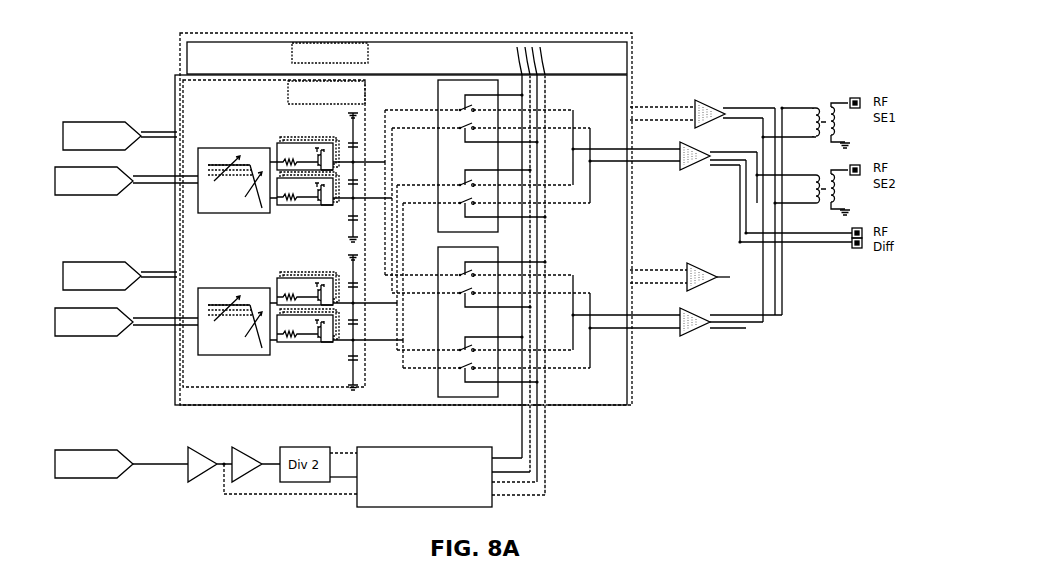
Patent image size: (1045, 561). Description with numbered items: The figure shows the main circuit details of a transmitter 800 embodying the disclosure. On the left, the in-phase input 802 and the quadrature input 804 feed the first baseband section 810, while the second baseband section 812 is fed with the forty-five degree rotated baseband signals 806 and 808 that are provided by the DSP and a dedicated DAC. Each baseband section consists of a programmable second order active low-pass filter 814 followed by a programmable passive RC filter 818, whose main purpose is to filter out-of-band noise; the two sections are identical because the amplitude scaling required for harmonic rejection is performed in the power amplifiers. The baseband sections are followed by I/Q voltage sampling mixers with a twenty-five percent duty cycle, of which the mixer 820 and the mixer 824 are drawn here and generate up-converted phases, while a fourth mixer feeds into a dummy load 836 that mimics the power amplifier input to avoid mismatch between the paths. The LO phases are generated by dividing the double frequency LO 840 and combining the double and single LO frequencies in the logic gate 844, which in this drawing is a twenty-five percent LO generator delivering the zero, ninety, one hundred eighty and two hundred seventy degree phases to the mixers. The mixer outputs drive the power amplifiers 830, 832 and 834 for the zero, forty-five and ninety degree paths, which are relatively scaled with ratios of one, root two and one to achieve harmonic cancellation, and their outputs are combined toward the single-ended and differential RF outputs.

The transmitter 800 is at (117, 44).
The I input port 802 is at (97, 196).
The Q input port 804 is at (90, 338).
The 45° rotated baseband signal 806 is at (93, 120).
The 45° rotated baseband signal 808 is at (113, 262).
The baseband section 810 is at (367, 110).
The baseband section 812 is at (370, 55).
The programmable 2nd order active low-pass filter 814 is at (220, 145).
The programmable passive RC filter 818 is at (300, 143).
The I/Q voltage sampling mixer 820 is at (462, 80).
The I/Q voltage sampling mixer 824 is at (468, 403).
The power amplifier 830 is at (705, 168).
The power amplifier 832 is at (693, 112).
The power amplifier 834 is at (682, 340).
The dummy load 836 is at (717, 256).
The double frequency LO 840 is at (93, 482).
The logic gate 844 is at (395, 445).